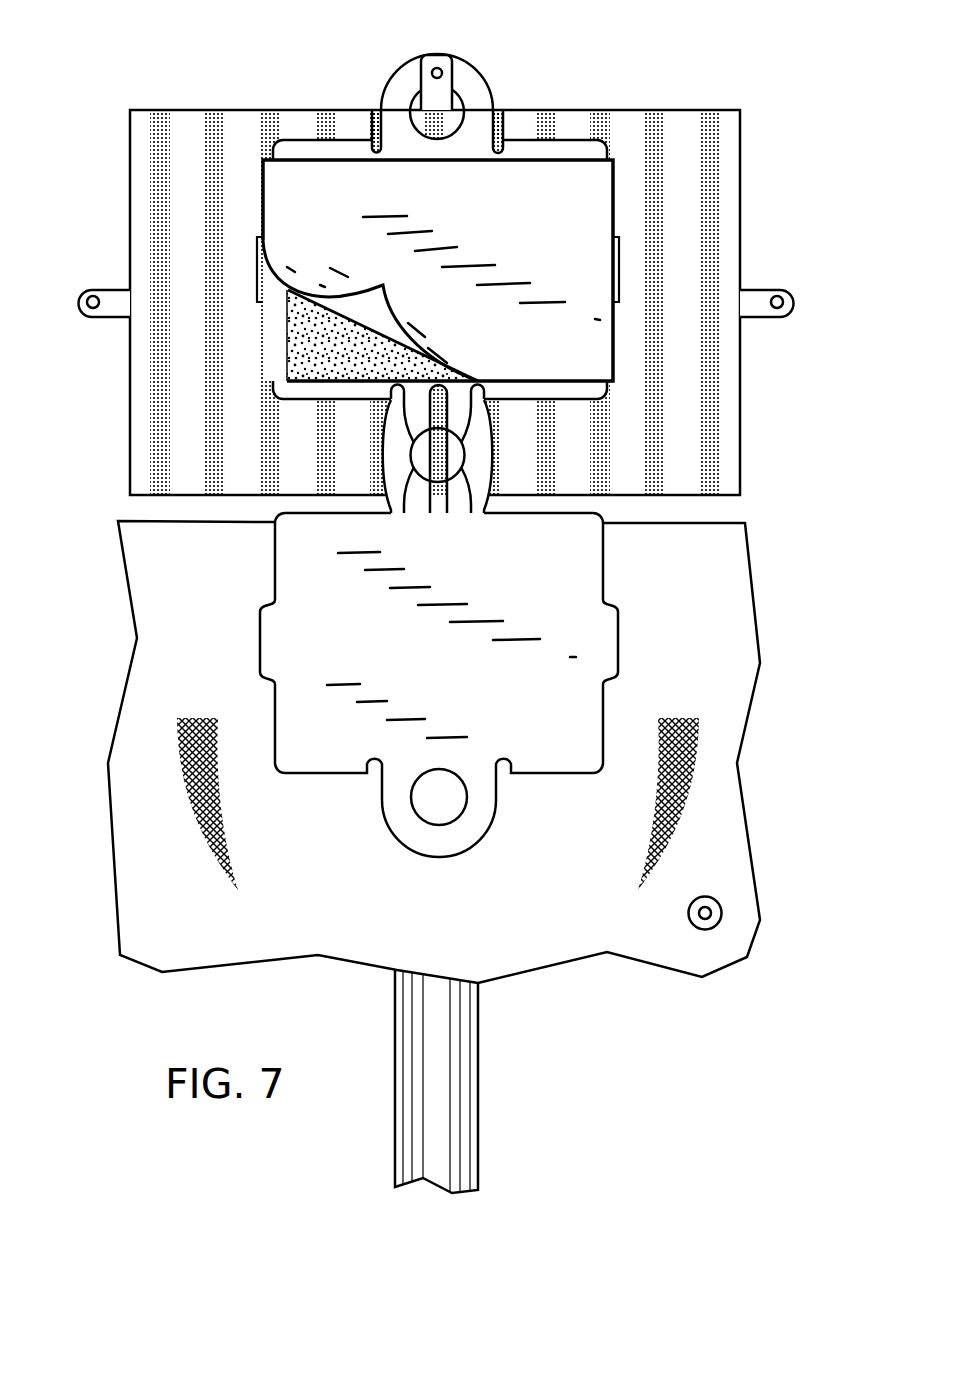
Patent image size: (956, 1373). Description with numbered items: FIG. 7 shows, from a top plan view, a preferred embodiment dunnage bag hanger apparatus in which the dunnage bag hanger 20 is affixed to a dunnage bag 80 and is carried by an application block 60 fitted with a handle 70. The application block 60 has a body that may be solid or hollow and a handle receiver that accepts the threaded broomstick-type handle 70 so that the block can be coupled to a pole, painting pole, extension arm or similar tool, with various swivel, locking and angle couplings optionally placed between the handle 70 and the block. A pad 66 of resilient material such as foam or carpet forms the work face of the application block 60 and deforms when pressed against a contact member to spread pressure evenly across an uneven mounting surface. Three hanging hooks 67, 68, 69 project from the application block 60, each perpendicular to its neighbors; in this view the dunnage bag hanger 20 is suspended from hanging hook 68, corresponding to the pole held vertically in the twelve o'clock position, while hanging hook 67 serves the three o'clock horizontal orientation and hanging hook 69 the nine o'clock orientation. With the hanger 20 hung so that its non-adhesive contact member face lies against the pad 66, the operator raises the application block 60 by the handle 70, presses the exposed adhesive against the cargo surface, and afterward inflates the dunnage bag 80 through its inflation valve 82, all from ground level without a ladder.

The dunnage bag hanger 20 is at (405, 60).
The application block 60 is at (740, 110).
The pad 66 is at (200, 403).
The hanging hook 67 is at (777, 289).
The hanging hook 68 is at (413, 81).
The hanging hook 69 is at (96, 252).
The handle 70 is at (480, 1045).
The dunnage bag 80 is at (520, 944).
The inflation valve 82 is at (722, 913).